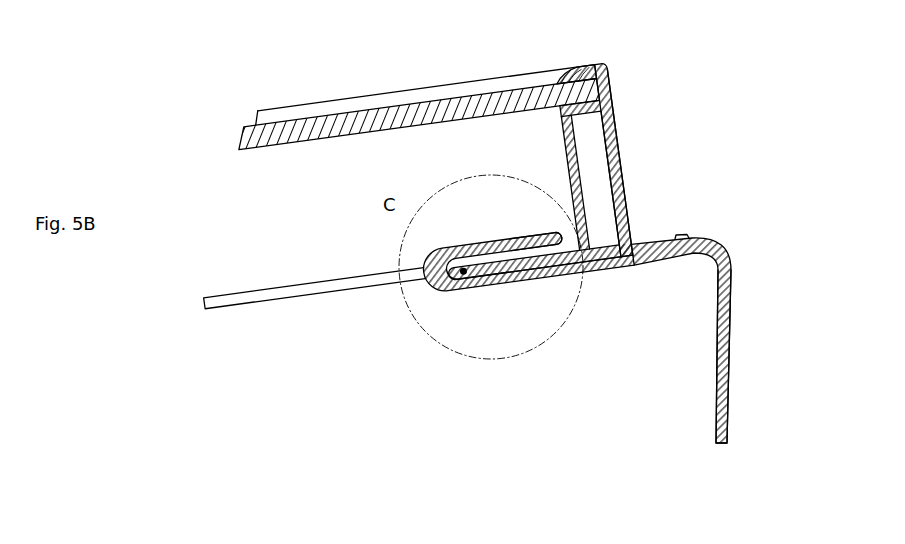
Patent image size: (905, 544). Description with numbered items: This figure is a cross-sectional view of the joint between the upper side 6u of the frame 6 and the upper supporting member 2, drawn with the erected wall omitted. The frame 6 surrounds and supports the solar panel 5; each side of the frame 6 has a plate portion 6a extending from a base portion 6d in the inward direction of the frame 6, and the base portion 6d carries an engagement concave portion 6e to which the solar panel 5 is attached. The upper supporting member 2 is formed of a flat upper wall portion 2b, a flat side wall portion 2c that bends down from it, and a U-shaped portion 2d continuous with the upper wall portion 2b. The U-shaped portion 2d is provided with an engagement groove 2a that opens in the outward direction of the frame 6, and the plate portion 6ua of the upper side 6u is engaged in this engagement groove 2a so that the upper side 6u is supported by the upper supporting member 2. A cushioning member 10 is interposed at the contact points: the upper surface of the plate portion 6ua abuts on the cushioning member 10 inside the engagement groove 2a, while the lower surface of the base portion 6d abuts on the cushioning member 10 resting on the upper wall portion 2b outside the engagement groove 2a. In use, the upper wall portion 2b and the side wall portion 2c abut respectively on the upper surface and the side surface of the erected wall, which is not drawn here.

The upper supporting member 2 is at (512, 337).
The engagement groove 2a is at (465, 272).
The upper wall portion 2b is at (623, 267).
The side wall portion 2c is at (727, 328).
The U-shaped portion 2d is at (418, 256).
The solar panel 5 is at (290, 148).
The frame 6 is at (490, 175).
The upper side 6u is at (490, 175).
The plate portion 6ua is at (533, 208).
The plate portion 6a is at (564, 248).
The base portion 6d is at (631, 198).
The engagement concave portion 6e is at (588, 82).
The cushioning member 10 is at (520, 232).